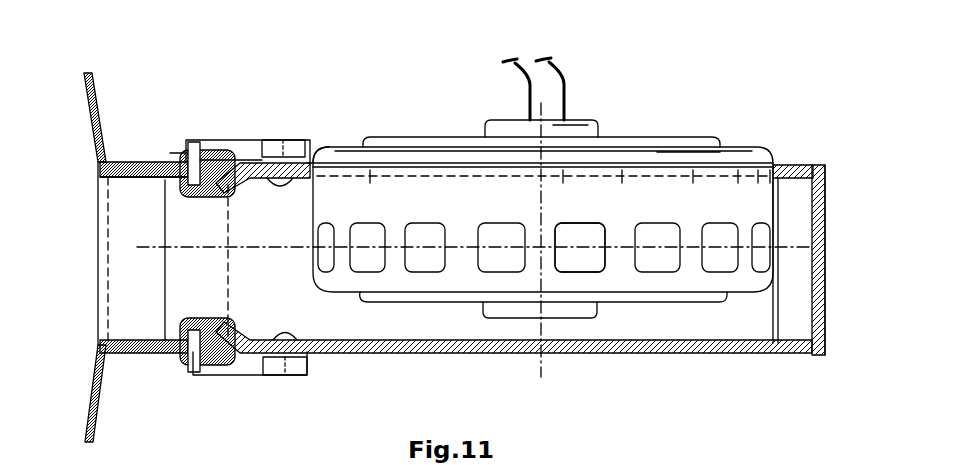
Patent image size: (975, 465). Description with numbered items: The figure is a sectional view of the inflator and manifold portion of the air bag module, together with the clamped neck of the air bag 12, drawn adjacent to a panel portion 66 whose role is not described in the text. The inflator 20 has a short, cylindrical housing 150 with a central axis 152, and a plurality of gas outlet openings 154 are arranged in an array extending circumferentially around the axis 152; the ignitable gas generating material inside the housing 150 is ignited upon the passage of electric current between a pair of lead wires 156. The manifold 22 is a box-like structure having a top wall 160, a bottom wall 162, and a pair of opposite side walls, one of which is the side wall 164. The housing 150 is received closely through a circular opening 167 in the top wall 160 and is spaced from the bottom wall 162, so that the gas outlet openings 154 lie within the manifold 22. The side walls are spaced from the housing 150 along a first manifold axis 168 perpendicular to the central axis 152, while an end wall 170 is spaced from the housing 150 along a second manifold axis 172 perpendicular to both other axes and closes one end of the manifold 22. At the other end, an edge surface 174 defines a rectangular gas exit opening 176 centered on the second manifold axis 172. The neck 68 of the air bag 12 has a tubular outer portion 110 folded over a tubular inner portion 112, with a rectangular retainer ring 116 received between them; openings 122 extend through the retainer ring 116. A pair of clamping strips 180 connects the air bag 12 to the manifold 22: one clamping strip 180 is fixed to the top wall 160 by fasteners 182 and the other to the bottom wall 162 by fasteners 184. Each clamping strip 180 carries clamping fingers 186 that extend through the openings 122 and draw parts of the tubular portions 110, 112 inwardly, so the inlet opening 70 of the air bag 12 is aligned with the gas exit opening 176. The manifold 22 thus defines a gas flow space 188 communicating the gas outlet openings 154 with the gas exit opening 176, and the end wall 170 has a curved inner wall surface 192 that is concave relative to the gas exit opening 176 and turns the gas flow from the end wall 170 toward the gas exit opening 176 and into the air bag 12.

The inflatable vehicle occupant restraint 12 is at (110, 50).
The inflator 20 is at (636, 125).
The manifold 22 is at (840, 217).
The door panel flange 66 is at (104, 107).
The neck 68 is at (171, 142).
The inlet opening 70 is at (244, 308).
The tubular outer portion 110 is at (125, 163).
The tubular inner portion 112 is at (110, 185).
The retainer ring 116 is at (233, 160).
The openings 122 is at (194, 147).
The housing 150 is at (675, 152).
The central axis 152 is at (538, 202).
The gas outlet openings 154 is at (653, 279).
The lead wires 156 is at (565, 92).
The top wall 160 is at (797, 170).
The bottom wall 162 is at (692, 353).
The side wall 164 is at (355, 330).
The circular opening 167 is at (349, 155).
The first manifold axis 168 is at (567, 233).
The end wall 170 is at (825, 262).
The second manifold axis 172 is at (467, 237).
The edge surface 174 is at (165, 231).
The gas exit opening 176 is at (170, 277).
The clamping strips 180 is at (239, 128).
The fasteners 182 is at (282, 157).
The fasteners 184 is at (287, 377).
The clamping fingers 186 is at (187, 190).
The gas flow space 188 is at (425, 212).
The curved inner wall surface 192 is at (800, 315).